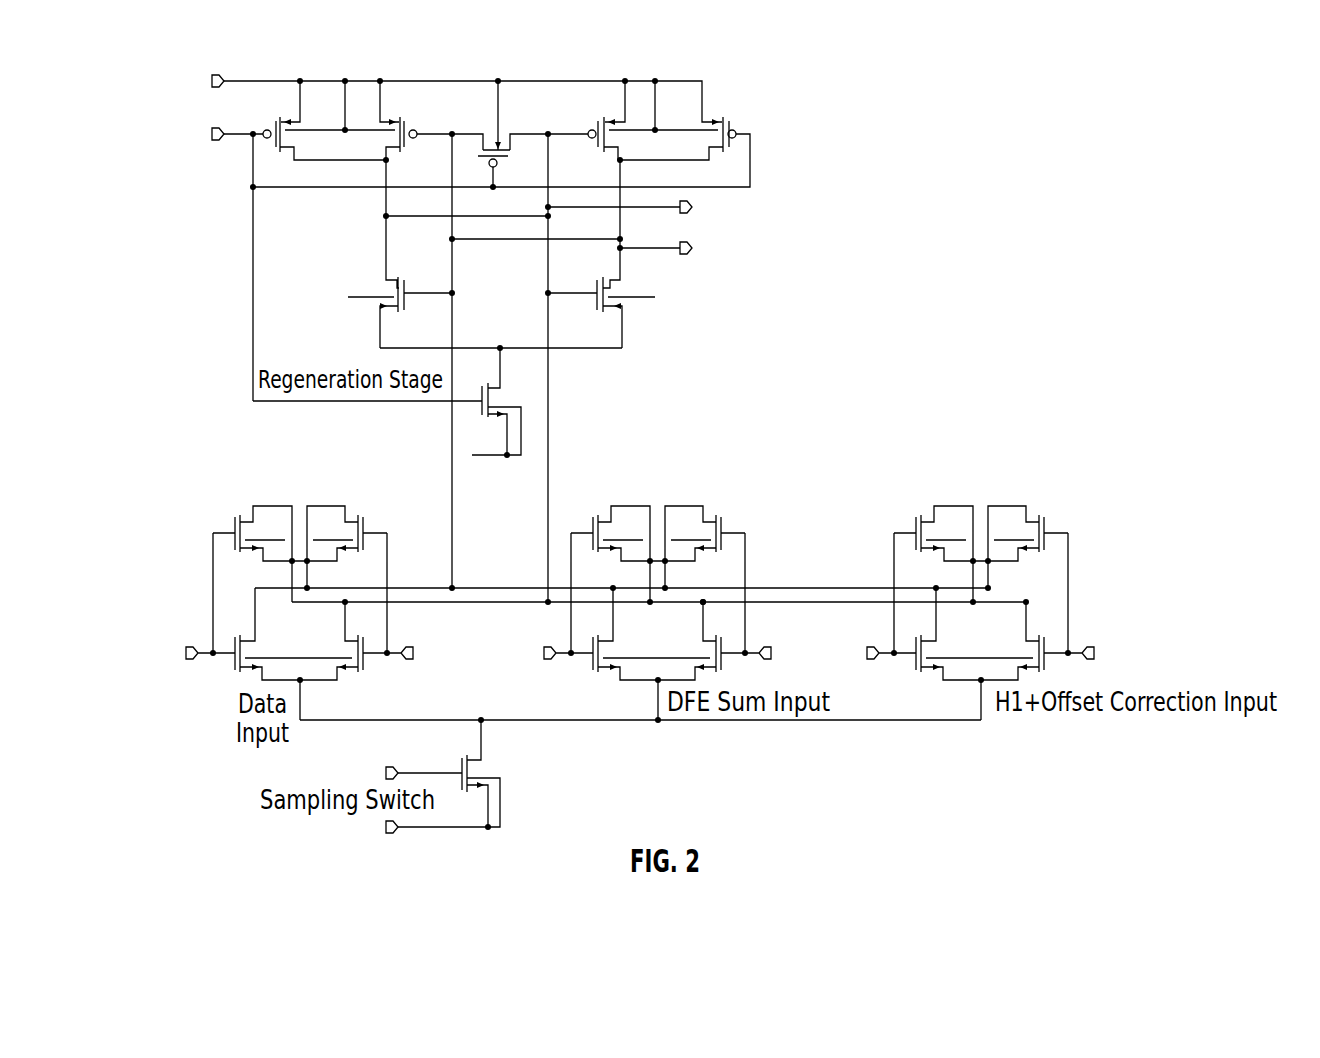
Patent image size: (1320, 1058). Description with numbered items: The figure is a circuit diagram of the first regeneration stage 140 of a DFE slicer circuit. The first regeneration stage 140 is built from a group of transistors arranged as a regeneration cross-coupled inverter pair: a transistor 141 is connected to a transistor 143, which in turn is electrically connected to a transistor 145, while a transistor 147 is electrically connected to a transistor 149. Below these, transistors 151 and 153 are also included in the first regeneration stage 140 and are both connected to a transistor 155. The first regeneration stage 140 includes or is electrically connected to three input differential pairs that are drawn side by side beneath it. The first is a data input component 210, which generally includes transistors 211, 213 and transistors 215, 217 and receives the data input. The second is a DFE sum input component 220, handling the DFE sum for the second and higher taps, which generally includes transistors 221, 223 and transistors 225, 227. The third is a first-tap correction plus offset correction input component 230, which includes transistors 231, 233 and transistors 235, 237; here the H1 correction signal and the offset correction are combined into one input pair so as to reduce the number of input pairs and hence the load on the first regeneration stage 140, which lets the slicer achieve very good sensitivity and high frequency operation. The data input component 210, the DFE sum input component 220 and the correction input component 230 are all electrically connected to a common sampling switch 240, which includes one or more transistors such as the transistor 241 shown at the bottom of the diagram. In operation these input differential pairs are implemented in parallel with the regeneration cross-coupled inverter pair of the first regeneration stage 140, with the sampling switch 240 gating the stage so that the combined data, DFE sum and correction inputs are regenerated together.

The first regeneration stage 140 is at (757, 103).
The transistor 141 is at (273, 156).
The transistor 143 is at (388, 140).
The transistor 145 is at (488, 133).
The transistor 147 is at (600, 112).
The transistor 149 is at (727, 112).
The transistor 151 is at (378, 309).
The transistor 153 is at (597, 318).
The transistor 155 is at (512, 395).
The data input component 210 is at (299, 583).
The transistor 211 is at (237, 512).
The transistor 213 is at (373, 516).
The transistor 215 is at (228, 661).
The transistor 217 is at (366, 675).
The DFE sum input component 220 is at (658, 583).
The transistor 221 is at (597, 512).
The transistor 223 is at (723, 512).
The transistor 225 is at (590, 663).
The transistor 227 is at (725, 632).
The h1-tap correction+offset correction input component 230 is at (984, 583).
The transistor 231 is at (917, 512).
The transistor 233 is at (1045, 512).
The transistor 235 is at (912, 663).
The transistor 237 is at (1050, 632).
The sampling switch 240 is at (491, 794).
The transistor 241 is at (464, 797).